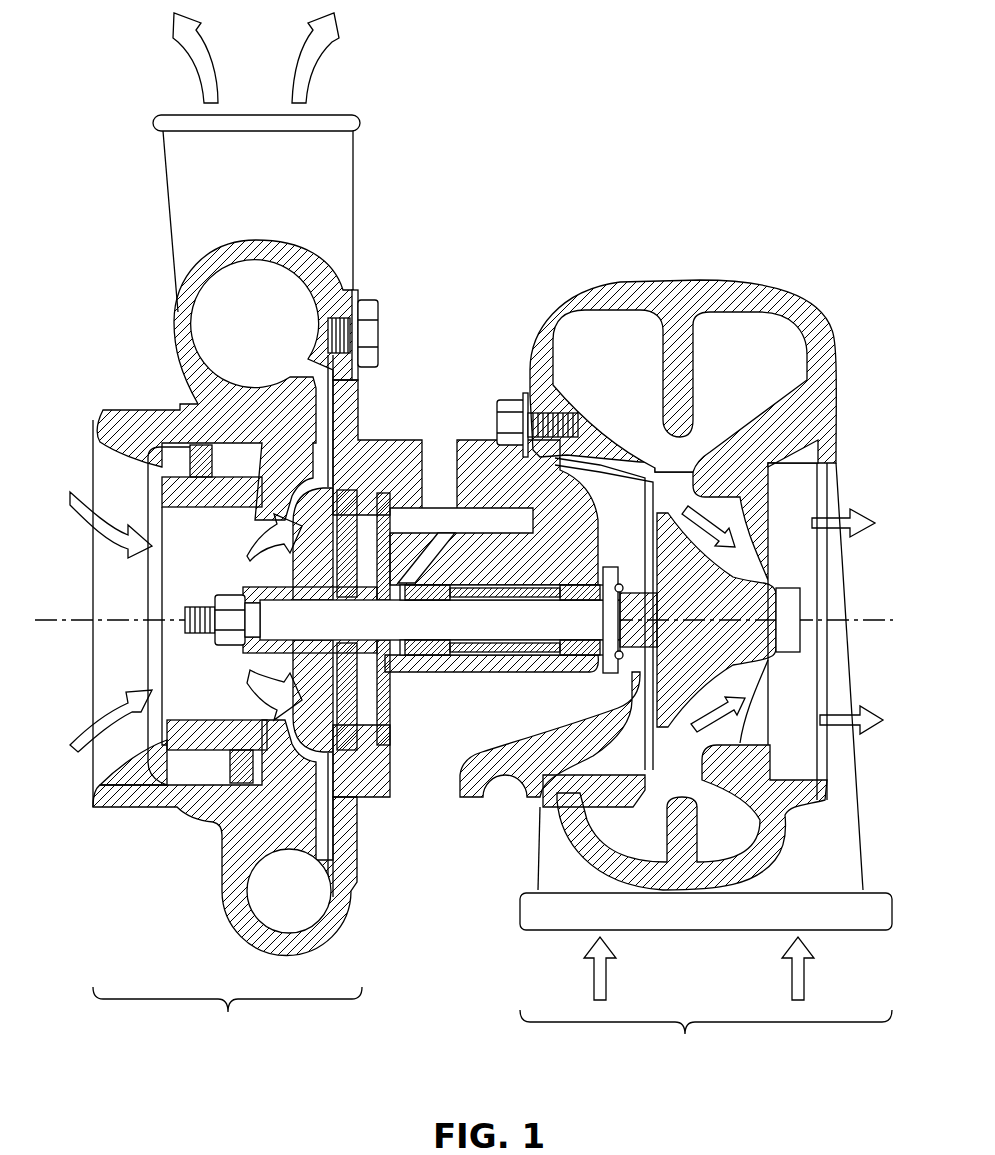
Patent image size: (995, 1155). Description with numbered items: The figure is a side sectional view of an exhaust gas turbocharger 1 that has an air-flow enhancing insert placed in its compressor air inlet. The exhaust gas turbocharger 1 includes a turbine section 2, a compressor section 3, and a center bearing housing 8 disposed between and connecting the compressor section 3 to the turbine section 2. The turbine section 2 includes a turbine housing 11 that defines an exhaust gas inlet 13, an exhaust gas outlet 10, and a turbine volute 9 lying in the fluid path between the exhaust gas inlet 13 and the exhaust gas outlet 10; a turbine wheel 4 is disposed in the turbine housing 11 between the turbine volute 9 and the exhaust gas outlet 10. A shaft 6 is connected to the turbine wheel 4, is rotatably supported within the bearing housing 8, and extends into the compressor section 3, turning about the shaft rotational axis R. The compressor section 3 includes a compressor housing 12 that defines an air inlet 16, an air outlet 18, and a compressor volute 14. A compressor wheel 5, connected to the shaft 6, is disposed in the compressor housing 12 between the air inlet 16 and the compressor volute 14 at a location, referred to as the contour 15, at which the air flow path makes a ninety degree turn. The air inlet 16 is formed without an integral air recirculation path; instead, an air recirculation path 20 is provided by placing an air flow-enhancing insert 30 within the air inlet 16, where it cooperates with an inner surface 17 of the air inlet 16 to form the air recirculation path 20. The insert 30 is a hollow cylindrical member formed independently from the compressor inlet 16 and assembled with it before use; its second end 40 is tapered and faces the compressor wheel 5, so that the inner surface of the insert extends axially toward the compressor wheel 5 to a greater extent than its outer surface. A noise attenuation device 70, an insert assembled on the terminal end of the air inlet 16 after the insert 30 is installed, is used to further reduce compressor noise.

The exhaust gas turbocharger 1 is at (515, 285).
The turbine section 2 is at (706, 1036).
The compressor section 3 is at (227, 1015).
The turbine wheel 4 is at (748, 650).
The compressor wheel 5 is at (282, 592).
The shaft 6 is at (515, 625).
The center bearing housing 8 is at (467, 445).
The turbine volute 9 is at (755, 330).
The exhaust gas outlet 10 is at (795, 460).
The turbine housing 11 is at (693, 877).
The compressor housing 12 is at (235, 863).
The exhaust gas inlet 13 is at (850, 853).
The compressor volute 14 is at (213, 303).
The contour 15 is at (328, 470).
The air inlet 16 is at (140, 802).
The inner surface 17 is at (103, 437).
The air outlet 18 is at (183, 178).
The air recirculation path 20 is at (245, 462).
The air flow-enhancing insert 30 is at (188, 686).
The second end 40 is at (190, 447).
The noise attenuation device 70 is at (105, 668).
The shaft rotational axis R is at (870, 604).